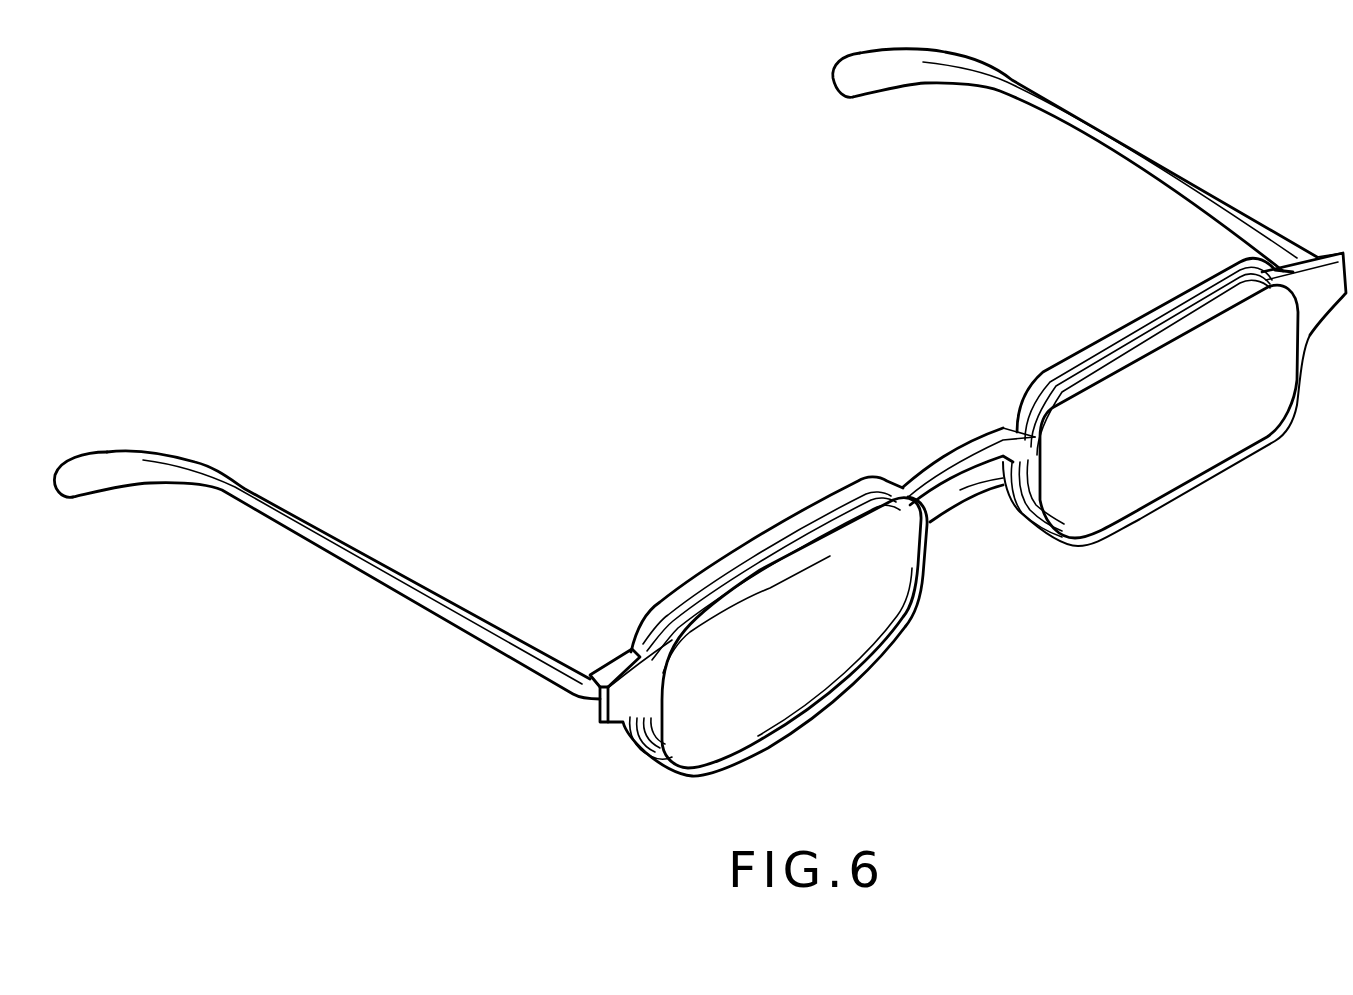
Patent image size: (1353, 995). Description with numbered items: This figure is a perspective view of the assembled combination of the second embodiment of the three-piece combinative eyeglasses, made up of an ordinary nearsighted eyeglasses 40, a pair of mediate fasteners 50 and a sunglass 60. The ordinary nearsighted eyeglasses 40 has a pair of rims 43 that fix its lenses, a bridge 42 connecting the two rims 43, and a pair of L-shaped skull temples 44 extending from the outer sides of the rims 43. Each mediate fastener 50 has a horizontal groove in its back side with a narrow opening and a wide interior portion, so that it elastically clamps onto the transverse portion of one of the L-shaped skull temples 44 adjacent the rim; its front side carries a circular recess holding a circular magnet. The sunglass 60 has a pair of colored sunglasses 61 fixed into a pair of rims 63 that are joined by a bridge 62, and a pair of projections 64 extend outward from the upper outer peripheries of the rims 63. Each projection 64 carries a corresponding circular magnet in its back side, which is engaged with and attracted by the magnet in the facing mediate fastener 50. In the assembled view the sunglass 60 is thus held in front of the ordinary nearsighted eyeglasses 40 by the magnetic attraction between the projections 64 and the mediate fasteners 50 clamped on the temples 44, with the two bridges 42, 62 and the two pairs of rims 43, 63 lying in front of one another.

The ordinary nearsighted eyeglasses 40 is at (989, 398).
The bridge 42 is at (929, 462).
The rims 43 is at (814, 497).
The L-shaped skull temples 44 is at (516, 672).
The mediate fasteners 50 is at (605, 665).
The sunglass 60 is at (1088, 572).
The colored sunglasses 61 is at (820, 648).
The bridge 62 is at (983, 470).
The rims 63 is at (770, 565).
The projections 64 is at (622, 710).